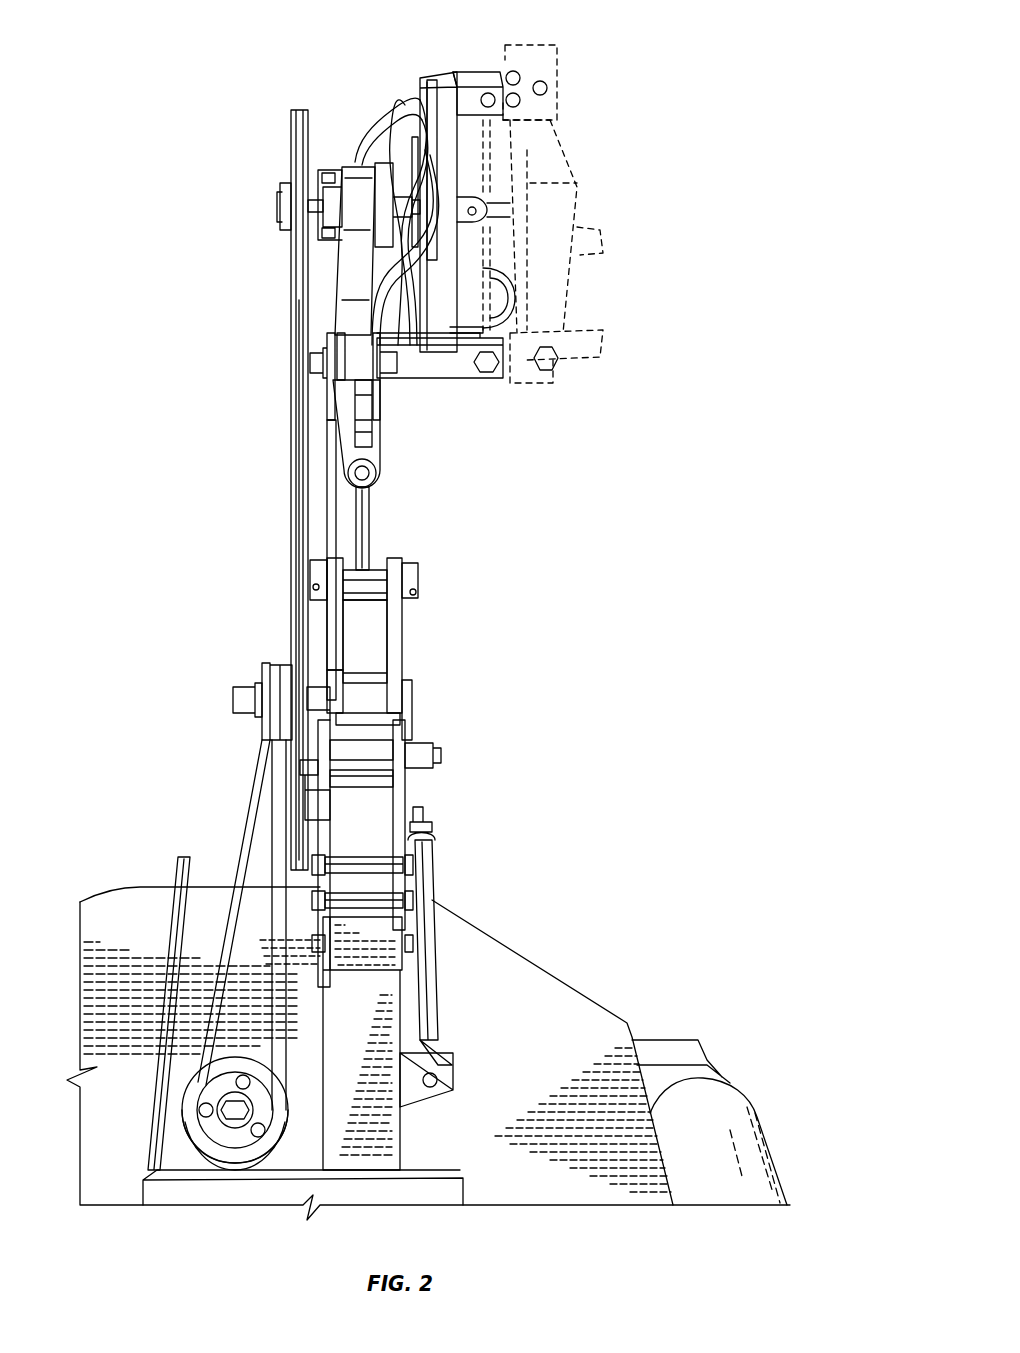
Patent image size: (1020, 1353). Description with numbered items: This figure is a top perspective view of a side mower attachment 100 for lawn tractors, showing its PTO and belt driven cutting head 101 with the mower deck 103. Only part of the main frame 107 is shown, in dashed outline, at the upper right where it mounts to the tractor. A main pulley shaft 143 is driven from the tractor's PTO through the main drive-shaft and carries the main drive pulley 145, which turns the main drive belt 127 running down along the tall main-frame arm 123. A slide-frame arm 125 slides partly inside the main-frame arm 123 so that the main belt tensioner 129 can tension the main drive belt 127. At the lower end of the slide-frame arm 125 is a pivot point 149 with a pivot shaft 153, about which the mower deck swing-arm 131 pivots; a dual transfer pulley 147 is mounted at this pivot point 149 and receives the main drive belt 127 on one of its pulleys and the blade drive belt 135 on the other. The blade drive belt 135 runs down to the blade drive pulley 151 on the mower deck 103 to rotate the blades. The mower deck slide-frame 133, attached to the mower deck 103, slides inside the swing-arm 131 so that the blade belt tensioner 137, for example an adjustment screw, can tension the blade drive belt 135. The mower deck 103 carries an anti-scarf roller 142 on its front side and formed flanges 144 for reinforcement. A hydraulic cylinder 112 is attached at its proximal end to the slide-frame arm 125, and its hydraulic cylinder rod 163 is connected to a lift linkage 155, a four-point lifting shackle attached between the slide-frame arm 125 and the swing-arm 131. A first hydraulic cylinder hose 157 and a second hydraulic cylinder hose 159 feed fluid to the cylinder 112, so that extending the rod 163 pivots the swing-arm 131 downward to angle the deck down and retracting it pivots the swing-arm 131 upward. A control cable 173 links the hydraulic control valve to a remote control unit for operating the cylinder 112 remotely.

The side mower attachment 100 is at (190, 230).
The cutting head 101 is at (575, 936).
The mower deck 103 is at (597, 1021).
The main frame 107 is at (440, 68).
The hydraulic cylinder 112 is at (376, 451).
The main-frame arm 123 is at (345, 286).
The slide-frame arm 125 is at (343, 519).
The main drive belt 127 is at (299, 367).
The main belt tensioner 129 is at (390, 341).
The mower deck swing-arm 131 is at (365, 836).
The mower deck slide-frame 133 is at (372, 1013).
The blade drive belt 135 is at (255, 807).
The blade belt tensioner 137 is at (423, 928).
The anti-scarf roller 142 is at (720, 1091).
The main pulley shaft 143 is at (318, 194).
The formed flanges 144 is at (180, 912).
The main drive pulley 145 is at (291, 120).
The dual transfer pulley 147 is at (262, 690).
The pivot point 149 is at (365, 681).
The blade drive pulley 151 is at (217, 1141).
The pivot shaft 153 is at (405, 689).
The lift linkage 155 is at (405, 621).
The first hydraulic cylinder hose 157 is at (402, 291).
The second hydraulic cylinder hose 159 is at (410, 263).
The hydraulic cylinder rod 163 is at (368, 529).
The control cable 173 is at (363, 131).